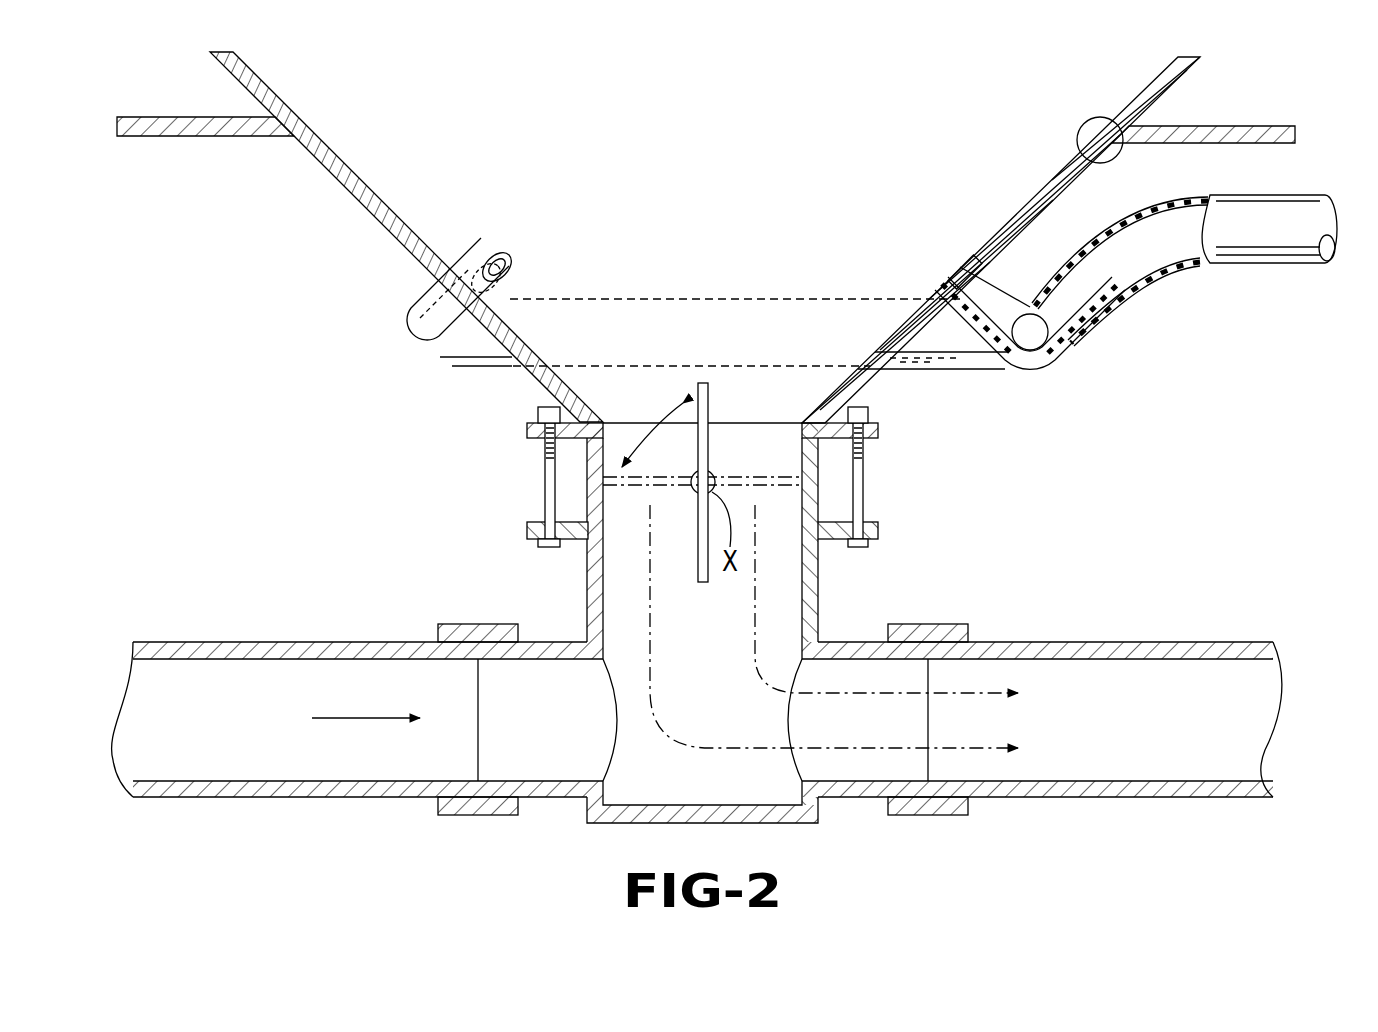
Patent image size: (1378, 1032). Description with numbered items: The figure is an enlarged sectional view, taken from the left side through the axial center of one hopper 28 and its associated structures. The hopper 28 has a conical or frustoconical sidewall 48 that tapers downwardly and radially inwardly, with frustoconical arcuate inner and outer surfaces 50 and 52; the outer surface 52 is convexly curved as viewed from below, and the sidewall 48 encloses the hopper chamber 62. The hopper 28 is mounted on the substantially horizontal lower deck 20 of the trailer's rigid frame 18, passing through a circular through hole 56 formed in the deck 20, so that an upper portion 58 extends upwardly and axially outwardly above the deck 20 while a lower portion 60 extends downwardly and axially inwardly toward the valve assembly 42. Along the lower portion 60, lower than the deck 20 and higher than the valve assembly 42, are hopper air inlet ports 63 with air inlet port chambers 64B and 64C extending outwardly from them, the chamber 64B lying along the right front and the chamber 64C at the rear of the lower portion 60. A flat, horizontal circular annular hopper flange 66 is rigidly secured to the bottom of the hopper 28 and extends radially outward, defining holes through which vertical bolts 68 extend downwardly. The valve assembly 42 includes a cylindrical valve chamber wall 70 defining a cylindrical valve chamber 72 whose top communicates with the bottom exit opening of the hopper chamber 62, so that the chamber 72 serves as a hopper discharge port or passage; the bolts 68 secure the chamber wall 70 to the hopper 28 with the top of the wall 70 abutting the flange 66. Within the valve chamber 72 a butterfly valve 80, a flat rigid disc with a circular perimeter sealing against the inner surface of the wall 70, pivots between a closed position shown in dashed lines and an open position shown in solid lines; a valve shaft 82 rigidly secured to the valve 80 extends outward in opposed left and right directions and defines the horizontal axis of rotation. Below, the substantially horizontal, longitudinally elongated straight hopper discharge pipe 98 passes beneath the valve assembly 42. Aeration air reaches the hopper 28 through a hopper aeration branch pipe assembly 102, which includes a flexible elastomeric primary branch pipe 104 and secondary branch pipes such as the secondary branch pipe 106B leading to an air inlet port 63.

The rigid frame 18 is at (179, 169).
The lower deck 20 is at (215, 142).
The hopper 28 is at (406, 237).
The frustoconical sidewall 48 is at (406, 237).
The inner surface 50 is at (406, 237).
The outer surface 52 is at (406, 237).
The circular through hole 56 is at (1097, 166).
The upper portion 58 is at (1035, 240).
The lower portion 60 is at (1187, 81).
The hopper chamber 62 is at (425, 173).
The hopper air inlet port 63 is at (504, 262).
The air inlet port chamber 64B is at (418, 352).
The air inlet port chamber 64C is at (1072, 342).
The hopper flange 66 is at (709, 478).
The vertical bolts 68 is at (545, 455).
The valve chamber wall 70 is at (880, 430).
The valve chamber 72 is at (884, 467).
The butterfly valve 80 is at (708, 403).
The valve shaft 82 is at (700, 492).
The hopper discharge pipe 98 is at (333, 642).
The hopper aeration branch pipe assembly 102 is at (1180, 276).
The primary branch pipe 104 is at (1284, 190).
The secondary branch pipe 106B is at (964, 376).
The valve assembly 42 is at (740, 623).